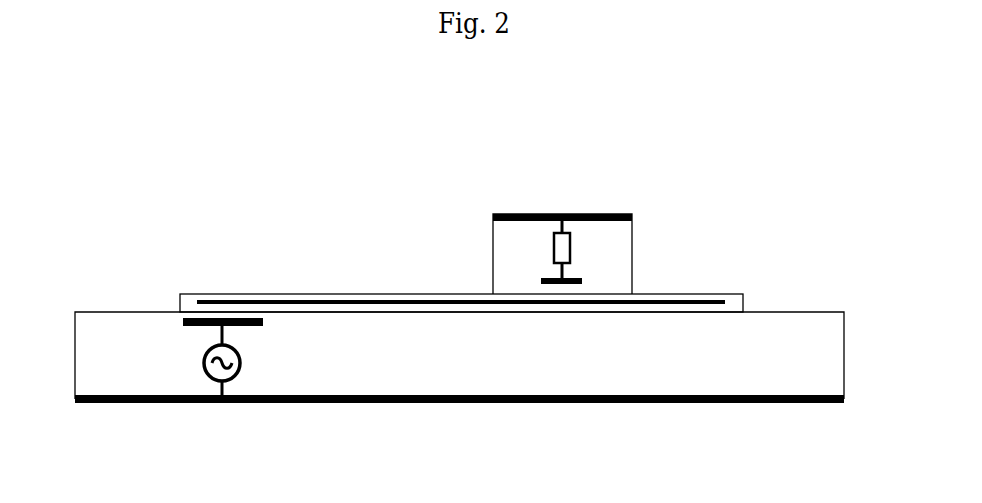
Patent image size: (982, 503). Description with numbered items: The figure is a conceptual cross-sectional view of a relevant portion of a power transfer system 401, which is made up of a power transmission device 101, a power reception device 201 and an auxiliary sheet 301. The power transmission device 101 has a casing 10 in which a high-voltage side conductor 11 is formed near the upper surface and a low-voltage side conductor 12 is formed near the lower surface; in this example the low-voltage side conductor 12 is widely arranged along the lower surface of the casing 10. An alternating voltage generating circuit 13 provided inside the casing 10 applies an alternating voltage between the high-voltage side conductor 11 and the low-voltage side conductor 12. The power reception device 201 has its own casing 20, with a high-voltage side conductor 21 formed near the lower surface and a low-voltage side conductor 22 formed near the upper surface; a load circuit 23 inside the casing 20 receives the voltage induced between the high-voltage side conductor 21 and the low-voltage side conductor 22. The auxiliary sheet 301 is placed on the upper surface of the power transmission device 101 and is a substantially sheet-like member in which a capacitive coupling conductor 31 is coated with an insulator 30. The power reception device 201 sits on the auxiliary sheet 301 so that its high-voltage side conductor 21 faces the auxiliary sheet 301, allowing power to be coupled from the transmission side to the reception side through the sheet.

The power transfer system 401 is at (797, 152).
The casing 10 is at (813, 312).
The low-voltage side conductor 12 is at (290, 403).
The power transmission device 101 is at (97, 298).
The insulator 30 is at (743, 295).
The capacitive coupling conductor 31 is at (370, 300).
The auxiliary sheet 301 is at (702, 283).
The power reception device 201 is at (462, 228).
The casing 20 is at (632, 248).
The low-voltage side conductor 22 is at (537, 214).
The load circuit 23 is at (551, 250).
The high-voltage side conductor 21 is at (578, 276).
The high-voltage side conductor 11 is at (205, 328).
The alternating voltage generating circuit 13 is at (240, 358).